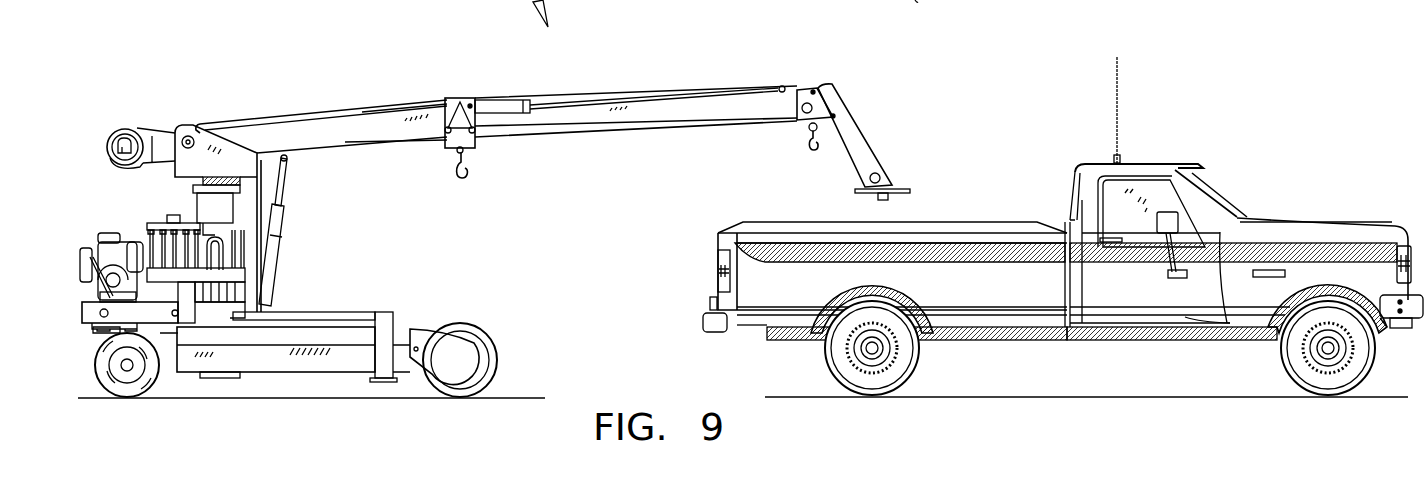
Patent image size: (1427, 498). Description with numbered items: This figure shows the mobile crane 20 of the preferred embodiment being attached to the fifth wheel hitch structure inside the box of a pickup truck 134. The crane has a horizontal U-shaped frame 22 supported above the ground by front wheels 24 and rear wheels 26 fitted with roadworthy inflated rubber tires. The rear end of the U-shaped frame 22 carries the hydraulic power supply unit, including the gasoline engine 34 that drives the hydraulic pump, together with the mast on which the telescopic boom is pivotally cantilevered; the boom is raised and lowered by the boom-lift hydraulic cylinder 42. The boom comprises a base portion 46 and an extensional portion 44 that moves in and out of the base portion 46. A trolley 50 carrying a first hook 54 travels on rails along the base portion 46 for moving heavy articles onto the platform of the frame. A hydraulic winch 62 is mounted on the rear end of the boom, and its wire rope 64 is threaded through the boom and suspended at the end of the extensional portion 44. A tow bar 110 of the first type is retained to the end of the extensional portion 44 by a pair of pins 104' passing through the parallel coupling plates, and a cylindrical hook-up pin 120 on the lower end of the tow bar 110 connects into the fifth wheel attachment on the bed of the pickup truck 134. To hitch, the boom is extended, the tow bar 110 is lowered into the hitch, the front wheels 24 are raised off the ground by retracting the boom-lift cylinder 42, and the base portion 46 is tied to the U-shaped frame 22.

The mobile crane 20 is at (500, 265).
The U-shaped frame 22 is at (283, 362).
The front wheels 24 is at (493, 339).
The rear wheels 26 is at (148, 392).
The gasoline engine 34 is at (107, 235).
The boom-lift hydraulic cylinder 42 is at (276, 237).
The extensional portion 44 is at (690, 117).
The base portion 46 is at (325, 138).
The trolley 50 is at (457, 97).
The first hook 54 is at (470, 172).
The hydraulic winch 62 is at (142, 123).
The wire rope 64 is at (807, 127).
The pins 104' is at (813, 73).
The tow bar 110 is at (867, 140).
The hook-up pin 120 is at (947, 0).
The pickup truck 134 is at (1202, 87).